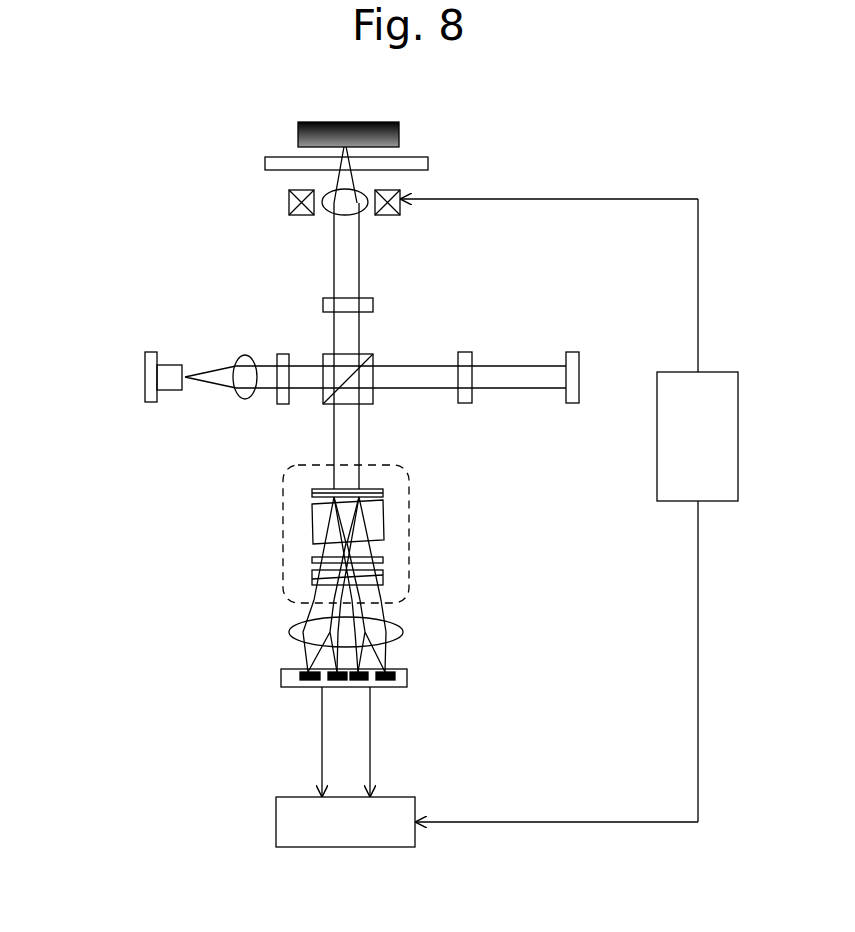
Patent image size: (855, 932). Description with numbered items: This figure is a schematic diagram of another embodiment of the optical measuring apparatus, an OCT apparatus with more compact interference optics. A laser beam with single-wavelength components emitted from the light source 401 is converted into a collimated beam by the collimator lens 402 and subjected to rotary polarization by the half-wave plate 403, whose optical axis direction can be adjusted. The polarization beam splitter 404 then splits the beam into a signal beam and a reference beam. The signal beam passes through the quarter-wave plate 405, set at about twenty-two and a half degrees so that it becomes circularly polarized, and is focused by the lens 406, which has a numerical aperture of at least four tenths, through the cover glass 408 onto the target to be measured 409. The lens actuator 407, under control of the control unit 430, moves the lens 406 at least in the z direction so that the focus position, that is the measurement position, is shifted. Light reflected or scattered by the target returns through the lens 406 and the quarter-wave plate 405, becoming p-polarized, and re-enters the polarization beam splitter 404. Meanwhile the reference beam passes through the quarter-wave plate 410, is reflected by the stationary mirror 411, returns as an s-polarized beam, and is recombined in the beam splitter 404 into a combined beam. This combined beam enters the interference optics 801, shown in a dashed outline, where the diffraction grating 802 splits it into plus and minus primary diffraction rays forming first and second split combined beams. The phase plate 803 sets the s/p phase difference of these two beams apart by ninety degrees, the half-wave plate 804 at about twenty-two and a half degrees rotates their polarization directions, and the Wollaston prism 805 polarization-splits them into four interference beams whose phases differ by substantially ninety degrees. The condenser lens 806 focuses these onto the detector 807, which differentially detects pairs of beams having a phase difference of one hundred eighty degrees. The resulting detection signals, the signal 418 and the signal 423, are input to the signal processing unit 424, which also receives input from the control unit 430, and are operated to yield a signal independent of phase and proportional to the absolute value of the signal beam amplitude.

The light source 401 is at (143, 370).
The collimator lens 402 is at (240, 357).
The λ/2 plate 403 is at (277, 404).
The polarization beam splitter 404 is at (330, 355).
The λ/4 plate 405 is at (323, 300).
The lens 406 is at (358, 213).
The lens actuator 407 is at (400, 190).
The cover glass 408 is at (265, 163).
The target to be measured 409 is at (298, 134).
The λ/4 plate 410 is at (465, 352).
The stationary mirror 411 is at (573, 352).
The signal 418 is at (322, 722).
The signal 423 is at (370, 740).
The signal processing unit 424 is at (343, 848).
The control unit 430 is at (720, 373).
The interference optics 801 is at (400, 470).
The diffraction grating 802 is at (383, 492).
The phase plate 803 is at (312, 523).
The λ/2 plate 804 is at (383, 558).
The Wollaston prism 805 is at (312, 576).
The condenser lens 806 is at (403, 632).
The detector 807 is at (281, 677).